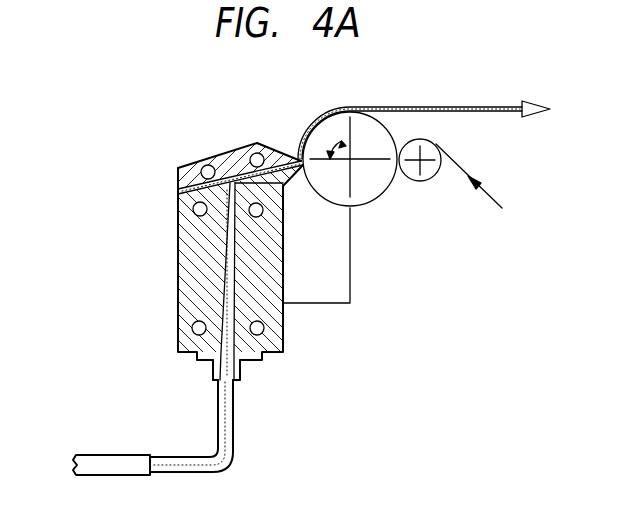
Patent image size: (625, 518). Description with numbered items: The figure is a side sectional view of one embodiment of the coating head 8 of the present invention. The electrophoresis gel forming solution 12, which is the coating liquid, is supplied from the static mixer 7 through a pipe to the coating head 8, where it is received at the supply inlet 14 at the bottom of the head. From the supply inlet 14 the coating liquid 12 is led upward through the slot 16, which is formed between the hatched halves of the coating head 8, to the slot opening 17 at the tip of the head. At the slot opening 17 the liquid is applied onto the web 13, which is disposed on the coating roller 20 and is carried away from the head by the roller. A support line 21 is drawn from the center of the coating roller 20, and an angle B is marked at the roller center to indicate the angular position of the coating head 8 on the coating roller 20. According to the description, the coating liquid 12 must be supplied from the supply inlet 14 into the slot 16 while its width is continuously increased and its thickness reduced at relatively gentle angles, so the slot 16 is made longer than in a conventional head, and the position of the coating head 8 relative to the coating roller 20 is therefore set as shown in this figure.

The static mixer 7 is at (120, 456).
The coating head 8 is at (275, 318).
The electrophoresis gel forming solution 12 is at (188, 456).
The web 13 is at (433, 107).
The supply inlet 14 is at (238, 374).
The slot 16 is at (238, 172).
The slot opening 17 is at (298, 147).
The coating roller 20 is at (372, 188).
The roll support 21 is at (342, 272).
The wrap angle B is at (334, 148).